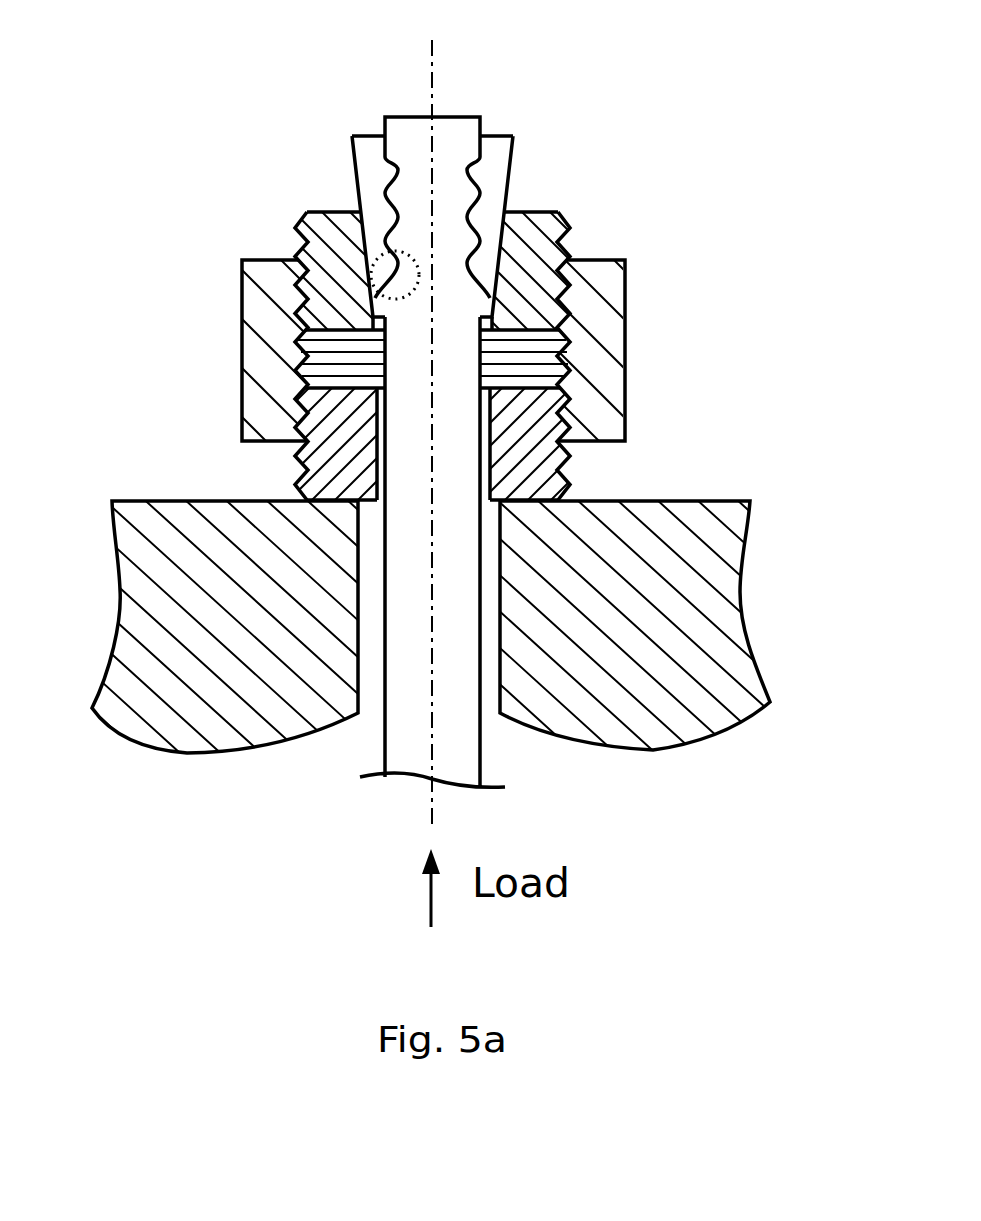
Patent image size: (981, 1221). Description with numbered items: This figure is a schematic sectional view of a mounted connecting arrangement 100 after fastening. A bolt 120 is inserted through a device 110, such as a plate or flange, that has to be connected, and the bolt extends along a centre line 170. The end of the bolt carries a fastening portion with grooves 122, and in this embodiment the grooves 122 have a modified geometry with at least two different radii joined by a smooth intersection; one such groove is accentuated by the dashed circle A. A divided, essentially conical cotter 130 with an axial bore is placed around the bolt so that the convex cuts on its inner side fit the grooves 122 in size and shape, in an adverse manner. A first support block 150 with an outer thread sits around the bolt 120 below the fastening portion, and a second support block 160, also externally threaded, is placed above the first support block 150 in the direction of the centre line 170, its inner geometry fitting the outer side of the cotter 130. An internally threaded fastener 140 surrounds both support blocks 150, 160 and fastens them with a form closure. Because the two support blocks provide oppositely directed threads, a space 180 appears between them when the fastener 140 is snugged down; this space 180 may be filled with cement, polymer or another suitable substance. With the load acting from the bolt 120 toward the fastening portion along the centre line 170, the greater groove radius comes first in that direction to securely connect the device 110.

The connecting arrangement 100 is at (178, 80).
The device 110 is at (148, 705).
The bolt 120 is at (463, 753).
The grooves 122 is at (397, 165).
The cotter 130 is at (505, 158).
The fastener 140 is at (592, 280).
The first support block 150 is at (310, 477).
The second support block 160 is at (533, 233).
The centre line 170 is at (428, 92).
The space 180 is at (567, 365).
The dashed circle A is at (367, 253).